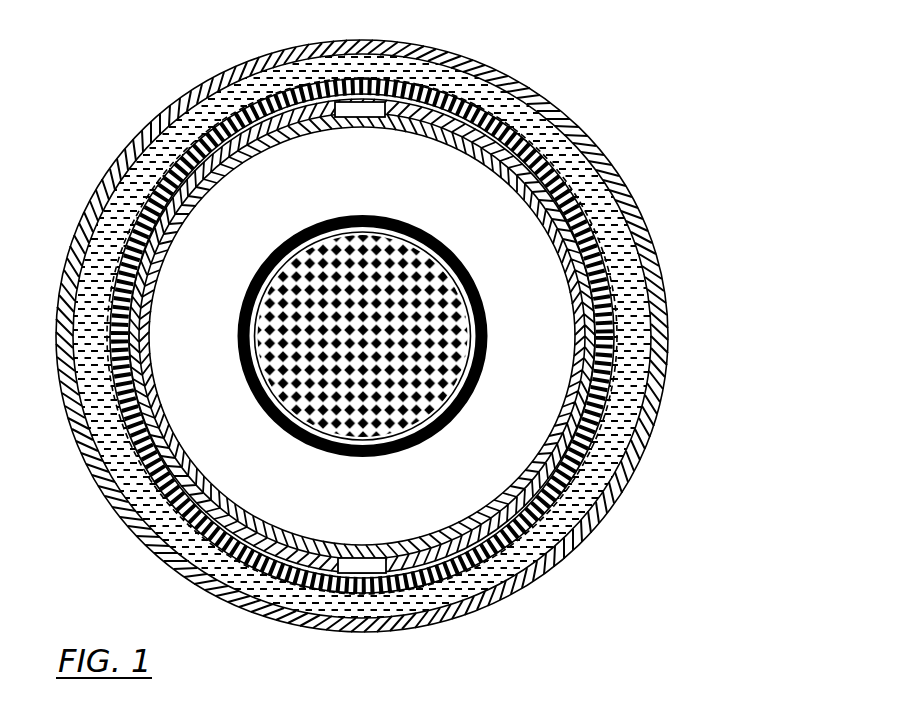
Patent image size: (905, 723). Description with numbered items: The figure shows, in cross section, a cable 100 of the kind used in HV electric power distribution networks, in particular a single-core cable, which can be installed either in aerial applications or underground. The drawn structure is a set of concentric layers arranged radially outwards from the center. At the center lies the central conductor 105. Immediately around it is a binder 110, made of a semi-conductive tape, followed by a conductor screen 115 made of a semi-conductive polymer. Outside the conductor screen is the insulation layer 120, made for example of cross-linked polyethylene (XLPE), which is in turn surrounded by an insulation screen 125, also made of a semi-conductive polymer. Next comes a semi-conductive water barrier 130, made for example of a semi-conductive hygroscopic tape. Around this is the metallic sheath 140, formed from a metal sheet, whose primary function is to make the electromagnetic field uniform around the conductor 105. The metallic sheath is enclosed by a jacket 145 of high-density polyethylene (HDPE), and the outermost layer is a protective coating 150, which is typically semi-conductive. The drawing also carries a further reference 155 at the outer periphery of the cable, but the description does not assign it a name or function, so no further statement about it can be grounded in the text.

The cable 100 is at (117, 75).
The central conductor 105 is at (363, 338).
The binder 110 is at (463, 262).
The conductor screen 115 is at (480, 290).
The insulation layer 120 is at (535, 307).
The insulation screen 125 is at (590, 322).
The semi-conductive water barrier 130 is at (612, 335).
The metallic sheath 140 is at (580, 445).
The jacket 145 is at (570, 508).
The protective coating 150 is at (540, 575).
The outer surface layer 155 is at (498, 602).